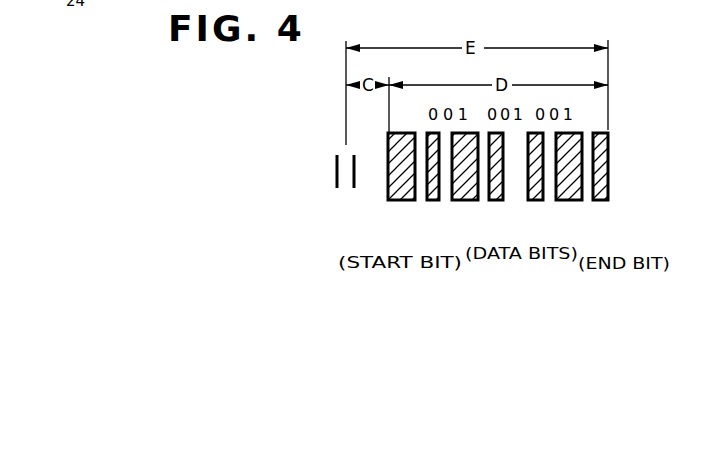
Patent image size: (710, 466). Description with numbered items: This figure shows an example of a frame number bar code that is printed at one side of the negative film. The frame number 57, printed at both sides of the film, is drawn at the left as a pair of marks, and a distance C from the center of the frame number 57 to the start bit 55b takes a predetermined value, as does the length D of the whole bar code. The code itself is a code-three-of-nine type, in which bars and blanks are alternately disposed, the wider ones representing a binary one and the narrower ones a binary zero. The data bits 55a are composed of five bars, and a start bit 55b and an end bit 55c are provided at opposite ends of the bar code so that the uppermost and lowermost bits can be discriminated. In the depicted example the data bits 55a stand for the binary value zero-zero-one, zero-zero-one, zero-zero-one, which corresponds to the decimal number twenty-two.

The frame number 57 is at (336, 170).
The data bits 55a is at (580, 209).
The start bit 55b is at (403, 200).
The end bit 55c is at (600, 200).